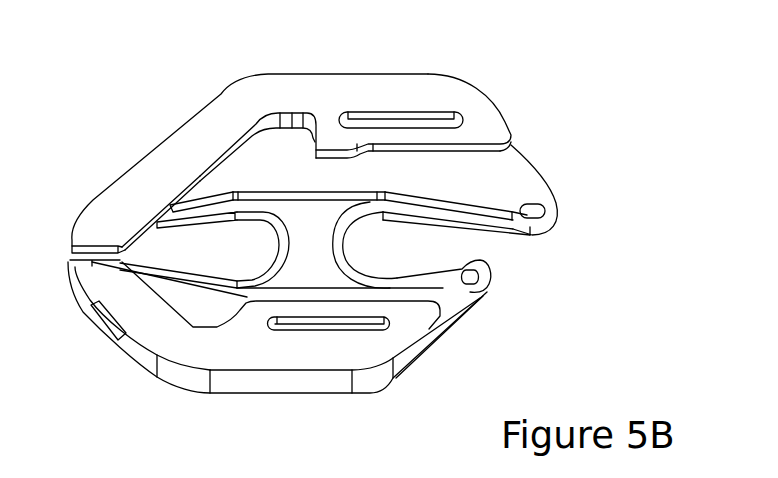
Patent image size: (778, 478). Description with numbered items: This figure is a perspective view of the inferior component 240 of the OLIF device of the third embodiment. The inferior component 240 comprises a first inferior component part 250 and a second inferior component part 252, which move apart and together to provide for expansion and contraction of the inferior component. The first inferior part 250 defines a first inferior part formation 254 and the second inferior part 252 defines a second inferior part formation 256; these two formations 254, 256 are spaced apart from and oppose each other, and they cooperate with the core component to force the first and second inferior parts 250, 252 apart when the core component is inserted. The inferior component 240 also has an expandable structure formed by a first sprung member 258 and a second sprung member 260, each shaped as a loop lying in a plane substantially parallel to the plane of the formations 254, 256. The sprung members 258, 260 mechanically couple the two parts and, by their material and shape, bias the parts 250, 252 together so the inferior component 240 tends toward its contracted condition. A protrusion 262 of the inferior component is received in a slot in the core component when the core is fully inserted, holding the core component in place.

The inferior component 240 is at (365, 238).
The first inferior component part 250 is at (332, 353).
The second inferior component part 252 is at (278, 150).
The first inferior part formation 254 is at (264, 312).
The second inferior part formation 256 is at (385, 137).
The first sprung member 258 is at (187, 265).
The second sprung member 260 is at (468, 242).
The protrusion 262 is at (340, 138).